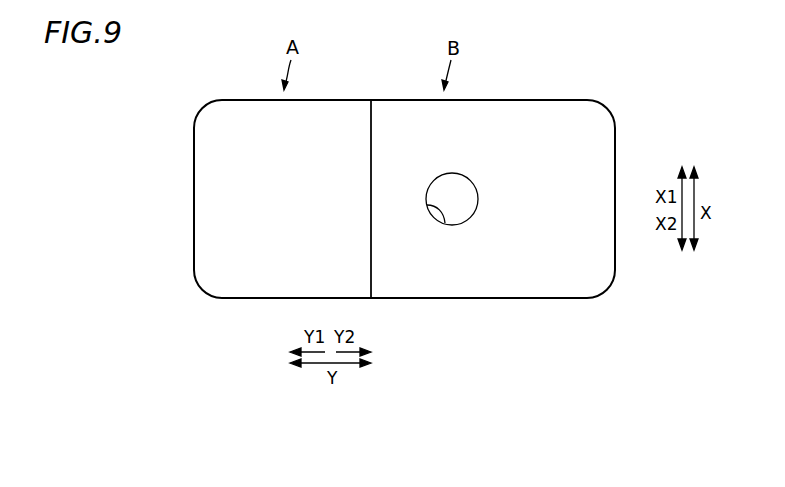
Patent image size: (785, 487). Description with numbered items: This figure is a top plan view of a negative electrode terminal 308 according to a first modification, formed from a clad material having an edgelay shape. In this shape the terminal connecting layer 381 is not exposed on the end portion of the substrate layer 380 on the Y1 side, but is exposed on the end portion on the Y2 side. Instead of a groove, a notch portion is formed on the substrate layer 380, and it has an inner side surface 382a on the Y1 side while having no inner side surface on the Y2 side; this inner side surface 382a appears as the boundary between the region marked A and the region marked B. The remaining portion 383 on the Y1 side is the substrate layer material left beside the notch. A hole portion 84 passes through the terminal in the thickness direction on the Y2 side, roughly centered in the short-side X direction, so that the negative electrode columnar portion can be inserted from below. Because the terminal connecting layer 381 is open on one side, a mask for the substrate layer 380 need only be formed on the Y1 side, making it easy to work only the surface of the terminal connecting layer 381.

The negative electrode terminal 308 is at (639, 70).
The first portion 383 is at (266, 126).
The substrate layer 380 is at (320, 133).
The inner side surface 382a is at (371, 130).
The terminal connecting layer 381 is at (502, 130).
The hole portion 84 is at (446, 222).